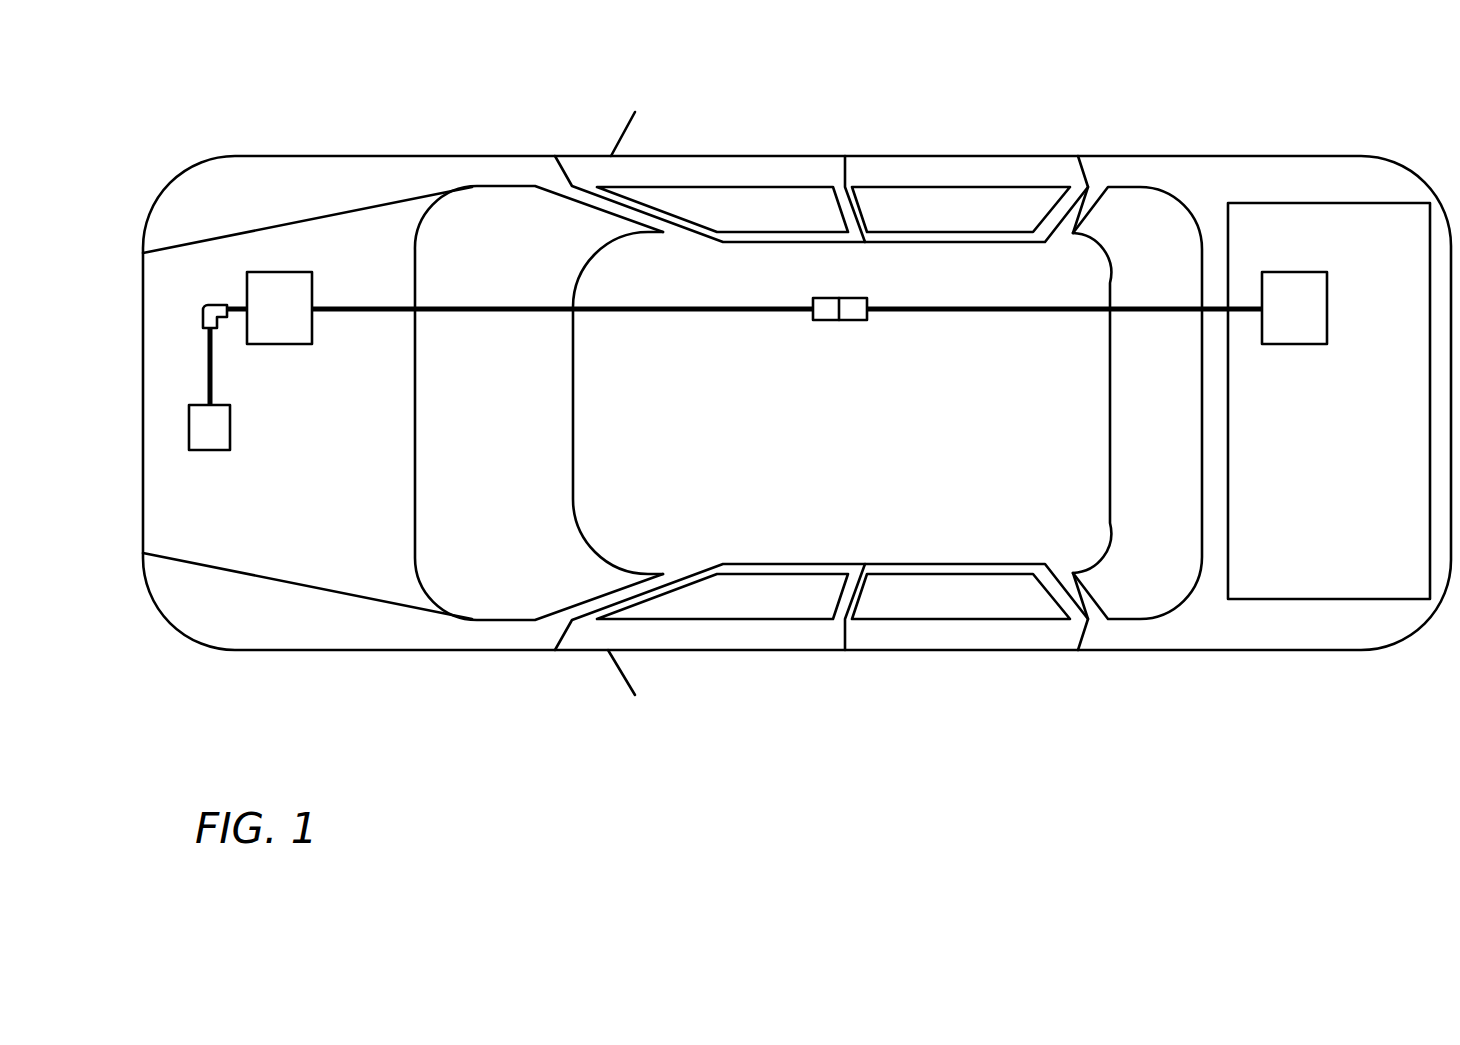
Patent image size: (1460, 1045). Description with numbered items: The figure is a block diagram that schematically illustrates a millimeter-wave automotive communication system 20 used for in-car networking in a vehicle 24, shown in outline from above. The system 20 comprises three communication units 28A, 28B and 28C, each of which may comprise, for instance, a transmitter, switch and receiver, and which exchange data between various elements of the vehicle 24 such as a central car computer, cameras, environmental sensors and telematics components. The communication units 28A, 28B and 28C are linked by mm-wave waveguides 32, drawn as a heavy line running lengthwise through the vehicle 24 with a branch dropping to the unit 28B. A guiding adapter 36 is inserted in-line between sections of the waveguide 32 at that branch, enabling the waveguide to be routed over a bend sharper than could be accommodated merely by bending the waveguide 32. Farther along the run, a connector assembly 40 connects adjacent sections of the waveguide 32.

The millimeter-wave automotive communication system 20 is at (253, 75).
The vehicle 24 is at (277, 652).
The communication unit 28A is at (313, 323).
The communication unit 28B is at (202, 452).
The communication unit 28C is at (1290, 346).
The mm-wave waveguide 32 is at (213, 378).
The guiding adapter 36 is at (203, 312).
The connector assembly 40 is at (866, 323).